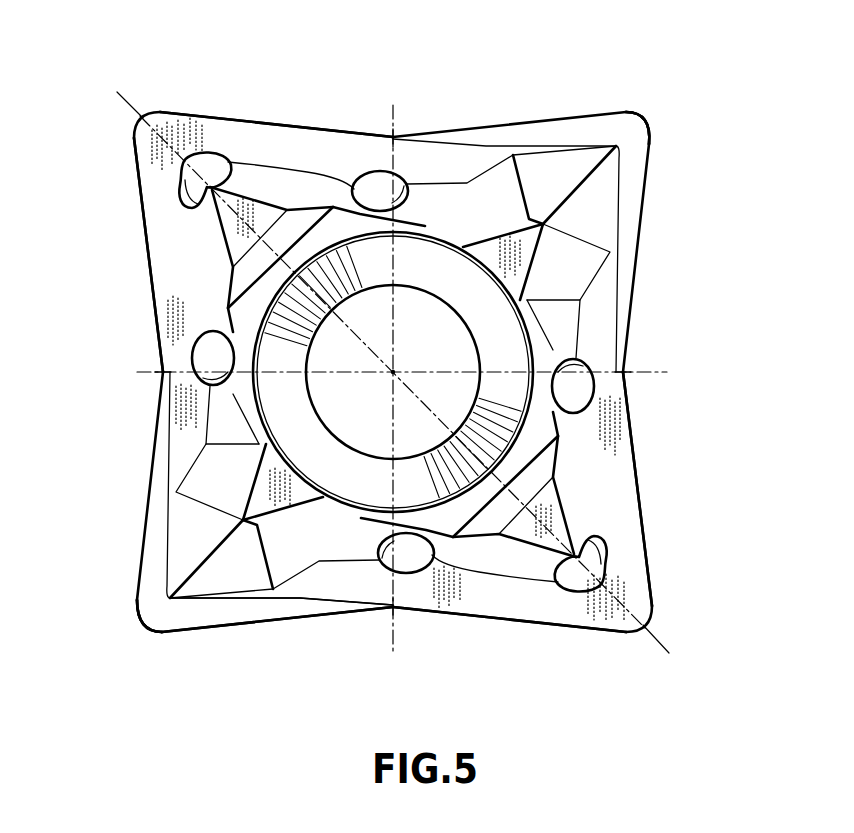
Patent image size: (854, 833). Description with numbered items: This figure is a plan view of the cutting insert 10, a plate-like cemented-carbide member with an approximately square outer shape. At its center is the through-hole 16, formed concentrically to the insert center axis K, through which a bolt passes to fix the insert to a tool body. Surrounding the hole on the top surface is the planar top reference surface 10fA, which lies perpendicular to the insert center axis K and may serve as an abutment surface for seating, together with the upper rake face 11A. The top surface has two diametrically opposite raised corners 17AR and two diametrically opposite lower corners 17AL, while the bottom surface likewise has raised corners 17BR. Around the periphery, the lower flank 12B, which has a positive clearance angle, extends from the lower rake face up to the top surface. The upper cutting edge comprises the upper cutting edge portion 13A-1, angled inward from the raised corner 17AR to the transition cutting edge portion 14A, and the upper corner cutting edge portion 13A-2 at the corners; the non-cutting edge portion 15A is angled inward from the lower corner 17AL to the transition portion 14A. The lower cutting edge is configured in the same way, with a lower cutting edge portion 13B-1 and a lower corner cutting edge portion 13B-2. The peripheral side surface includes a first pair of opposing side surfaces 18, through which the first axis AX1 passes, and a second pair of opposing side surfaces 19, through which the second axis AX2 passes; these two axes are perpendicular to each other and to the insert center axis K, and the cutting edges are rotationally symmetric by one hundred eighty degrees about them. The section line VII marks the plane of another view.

The cutting insert 10 is at (417, 387).
The planar top reference surface 10fA is at (273, 213).
The upper rake face 11A is at (273, 137).
The lower flank 12B is at (584, 127).
The upper cutting edge portion 13A-1 is at (653, 590).
The upper corner cutting edge portion 13A-2 is at (158, 110).
The lower cutting edge portion 13B-1 is at (540, 118).
The lower corner cutting edge portion 13B-2 is at (657, 121).
The transition cutting edge portion 14A is at (320, 600).
The non-cutting edge portion 15A is at (234, 607).
The central through-hole 16 is at (332, 430).
The lower corner 17AL is at (633, 131).
The raised corner 17AR is at (138, 129).
The raised corner 17BR is at (652, 124).
The first pair of opposing side surfaces 18 is at (151, 337).
The second pair of opposing side surfaces 19 is at (383, 124).
The first axis AX1 is at (645, 372).
The second axis AX2 is at (395, 108).
The insert center axis K is at (397, 370).
The section line VII is at (123, 35).